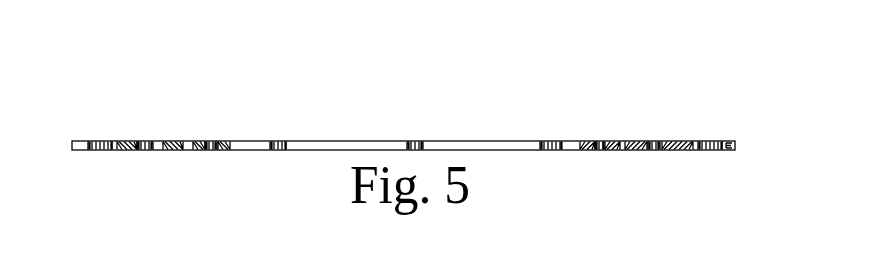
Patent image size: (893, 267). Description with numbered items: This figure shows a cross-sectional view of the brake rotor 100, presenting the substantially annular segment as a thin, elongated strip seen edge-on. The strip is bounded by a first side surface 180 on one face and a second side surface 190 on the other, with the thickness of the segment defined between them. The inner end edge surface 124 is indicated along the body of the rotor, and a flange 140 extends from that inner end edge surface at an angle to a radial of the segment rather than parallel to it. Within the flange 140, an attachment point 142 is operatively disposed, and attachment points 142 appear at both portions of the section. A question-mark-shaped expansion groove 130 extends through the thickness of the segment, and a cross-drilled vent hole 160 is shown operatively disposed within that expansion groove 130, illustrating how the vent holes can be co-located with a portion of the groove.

The rotor 100 is at (698, 94).
The inner end edge surface 124 is at (477, 140).
The question-mark-shaped expansion groove 130 is at (735, 146).
The flange 140 is at (222, 151).
The attachment point 142 is at (208, 140).
The cross-drilled vent hole 160 is at (99, 151).
The first side surface 180 is at (148, 140).
The second side surface 190 is at (147, 151).